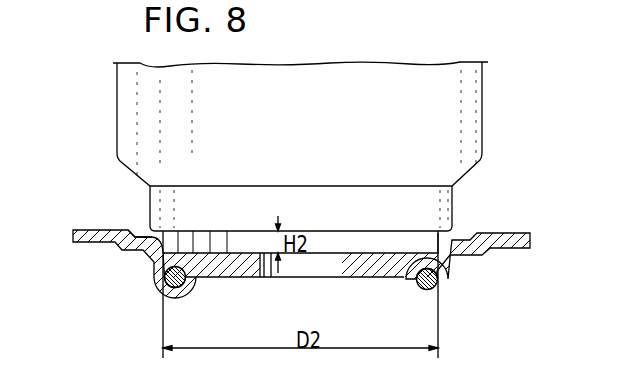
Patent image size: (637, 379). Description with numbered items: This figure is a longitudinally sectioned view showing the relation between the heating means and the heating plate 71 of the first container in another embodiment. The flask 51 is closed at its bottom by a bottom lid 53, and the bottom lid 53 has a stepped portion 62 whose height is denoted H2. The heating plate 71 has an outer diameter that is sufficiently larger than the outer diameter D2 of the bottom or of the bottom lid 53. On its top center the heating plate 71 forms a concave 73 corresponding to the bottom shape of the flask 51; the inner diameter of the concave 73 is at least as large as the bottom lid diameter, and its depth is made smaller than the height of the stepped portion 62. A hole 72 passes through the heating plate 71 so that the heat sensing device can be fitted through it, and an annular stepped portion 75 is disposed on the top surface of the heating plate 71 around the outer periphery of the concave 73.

The flask 51 is at (90, 134).
The bottom lid 53 is at (438, 202).
The stepped portion 62 is at (427, 240).
The heating plate 71 is at (92, 245).
The hole 72 is at (268, 277).
The concave 73 is at (147, 253).
The annular stepped portion 75 is at (128, 229).